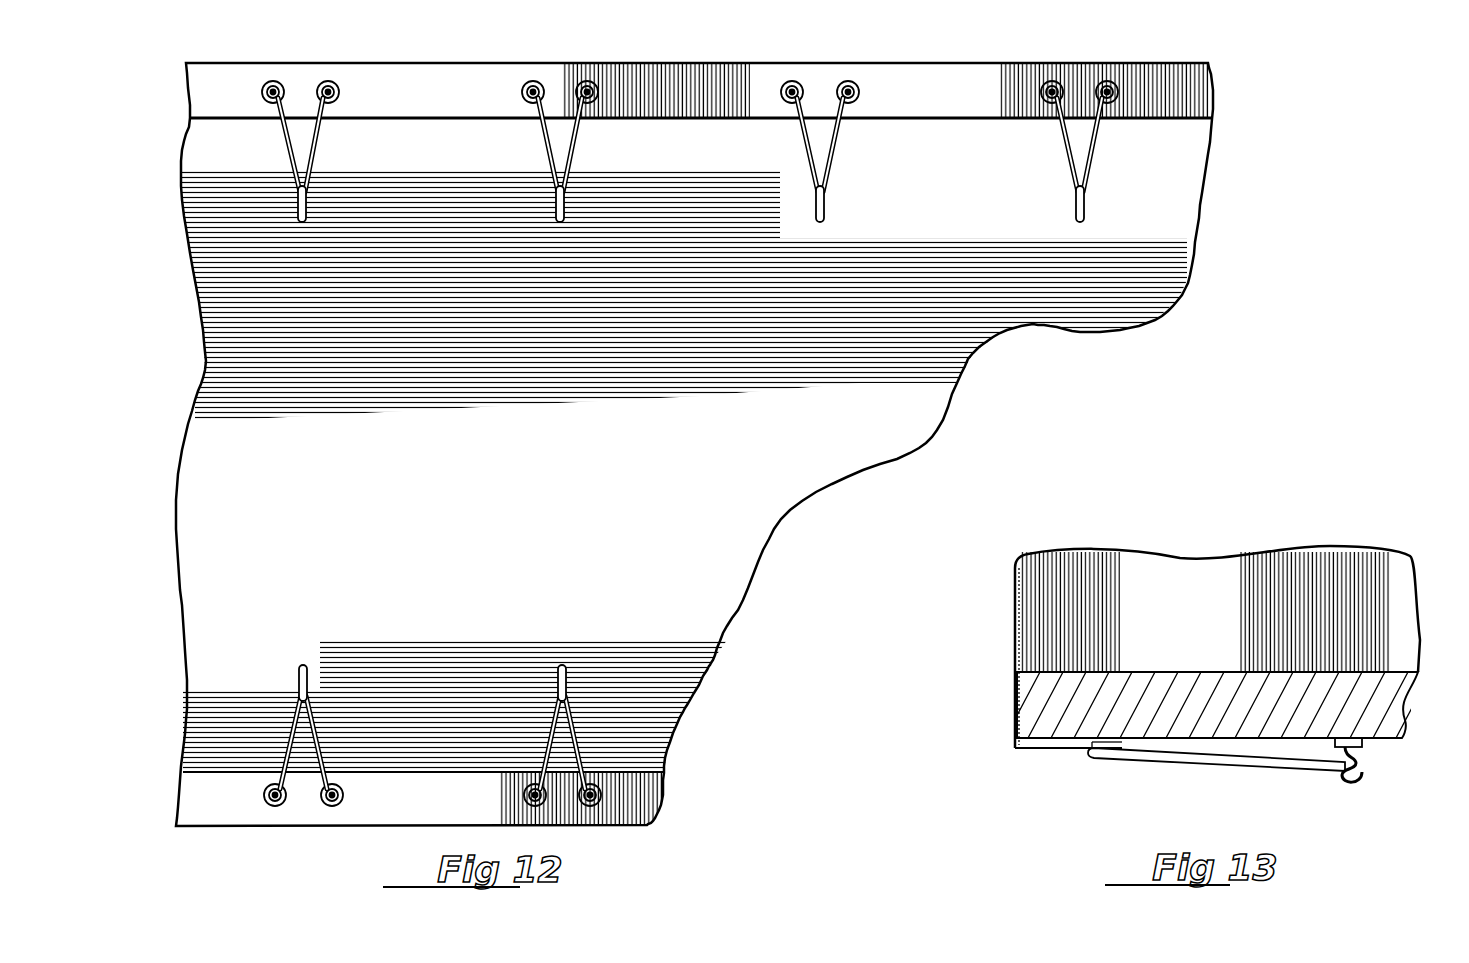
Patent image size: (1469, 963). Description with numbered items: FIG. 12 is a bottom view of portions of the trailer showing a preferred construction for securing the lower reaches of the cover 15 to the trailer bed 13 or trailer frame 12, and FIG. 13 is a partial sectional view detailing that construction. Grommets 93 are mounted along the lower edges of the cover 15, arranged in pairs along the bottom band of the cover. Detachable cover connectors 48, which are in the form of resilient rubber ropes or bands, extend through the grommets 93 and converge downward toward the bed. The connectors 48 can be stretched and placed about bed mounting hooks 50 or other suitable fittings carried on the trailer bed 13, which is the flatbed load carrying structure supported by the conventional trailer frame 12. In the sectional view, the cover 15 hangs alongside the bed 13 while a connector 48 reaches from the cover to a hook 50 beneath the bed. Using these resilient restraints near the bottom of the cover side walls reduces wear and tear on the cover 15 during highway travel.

In FIG. 13, the trailer frame 12 is at (1372, 703).
In FIG. 13, the trailer bed 13 is at (1176, 664).
In FIG. 12, the cover 15 is at (417, 95).
In FIG. 13, the cover 15 is at (1012, 650).
In FIG. 12, the detachable cover connectors 48 is at (283, 148).
In FIG. 13, the detachable cover connectors 48 is at (1158, 770).
In FIG. 12, the bed mounting hooks 50 is at (566, 205).
In FIG. 13, the bed mounting hooks 50 is at (1350, 785).
In FIG. 12, the grommets 93 is at (320, 83).